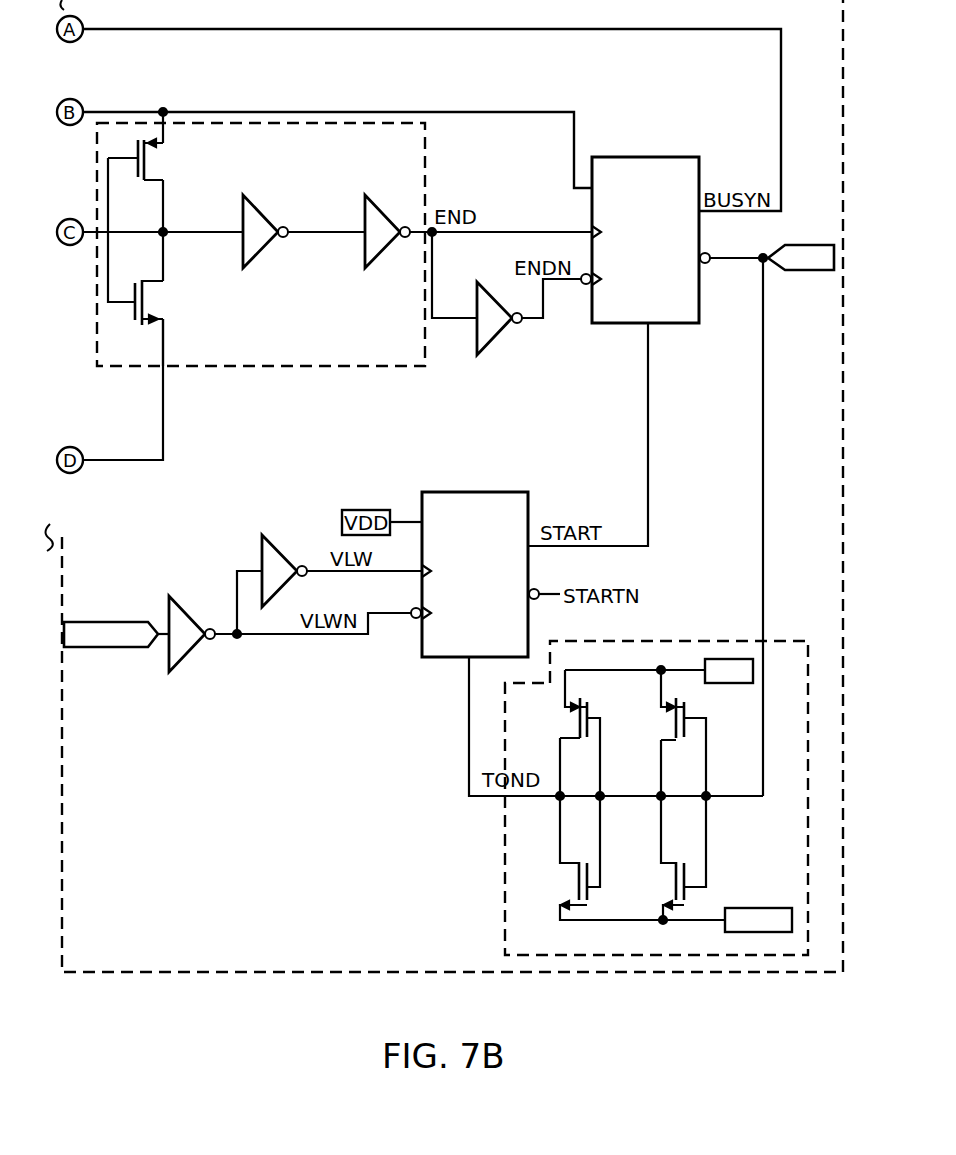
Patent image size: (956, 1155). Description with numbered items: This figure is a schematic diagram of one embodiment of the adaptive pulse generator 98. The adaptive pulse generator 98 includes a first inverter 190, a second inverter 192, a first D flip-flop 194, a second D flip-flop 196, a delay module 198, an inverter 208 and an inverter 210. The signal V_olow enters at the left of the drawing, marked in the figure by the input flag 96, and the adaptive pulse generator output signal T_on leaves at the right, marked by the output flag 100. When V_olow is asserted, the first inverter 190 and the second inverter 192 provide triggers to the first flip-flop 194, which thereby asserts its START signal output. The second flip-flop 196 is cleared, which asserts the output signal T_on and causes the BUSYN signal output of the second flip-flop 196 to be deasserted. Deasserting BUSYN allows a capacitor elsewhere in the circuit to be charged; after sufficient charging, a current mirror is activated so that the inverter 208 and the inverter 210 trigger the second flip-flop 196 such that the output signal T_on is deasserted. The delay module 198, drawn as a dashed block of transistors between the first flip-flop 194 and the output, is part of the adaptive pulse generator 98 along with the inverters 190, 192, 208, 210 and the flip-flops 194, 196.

The VOLOW input signal 96 is at (82, 648).
The adaptive pulse generator 98 is at (289, 973).
The TON output signal 100 is at (808, 231).
The first inverter 190 is at (169, 605).
The second inverter 192 is at (262, 538).
The first D flip-flop 194 is at (529, 493).
The second D flip-flop 196 is at (699, 159).
The delay module 198 is at (702, 638).
The inverter 208 is at (300, 366).
The inverter 210 is at (500, 333).